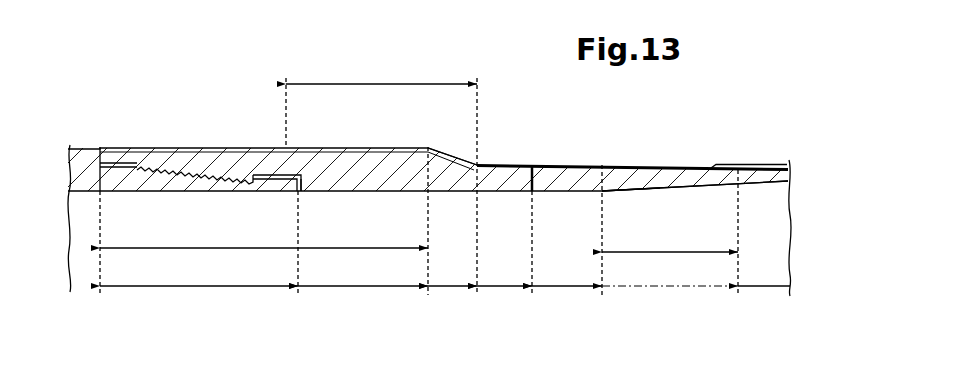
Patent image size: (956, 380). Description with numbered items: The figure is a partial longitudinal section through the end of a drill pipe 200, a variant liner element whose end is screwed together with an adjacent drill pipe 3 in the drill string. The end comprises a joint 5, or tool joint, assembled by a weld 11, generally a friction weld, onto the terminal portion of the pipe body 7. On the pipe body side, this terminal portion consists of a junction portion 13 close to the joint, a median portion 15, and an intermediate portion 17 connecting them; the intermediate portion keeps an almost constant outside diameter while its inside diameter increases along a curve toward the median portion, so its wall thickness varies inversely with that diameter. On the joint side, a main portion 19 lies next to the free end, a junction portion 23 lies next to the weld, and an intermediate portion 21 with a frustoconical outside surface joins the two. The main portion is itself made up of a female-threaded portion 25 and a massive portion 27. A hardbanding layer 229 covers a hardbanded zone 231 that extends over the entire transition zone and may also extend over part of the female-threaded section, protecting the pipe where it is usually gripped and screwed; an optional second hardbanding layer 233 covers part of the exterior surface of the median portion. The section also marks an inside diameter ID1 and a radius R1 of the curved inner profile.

The adjacent drill pipe 3 is at (85, 130).
The joint 5 is at (270, 148).
The pipe body 7 is at (632, 170).
The weld 11 is at (531, 196).
The junction portion 13 is at (557, 287).
The median portion 15 is at (773, 292).
The intermediate portion 17 is at (660, 252).
The main portion 19 is at (357, 248).
The intermediate portion 21 is at (448, 287).
The junction portion 23 is at (497, 287).
The female-threaded portion 25 is at (202, 287).
The massive portion 27 is at (362, 287).
The drill pipe 200 is at (714, 117).
The hardbanding layer 229 is at (459, 143).
The hardbanded zone 231 is at (386, 84).
The second hardbanding layer 233 is at (761, 162).
The first inner diameter ID1 is at (303, 198).
The radius R1 is at (678, 192).